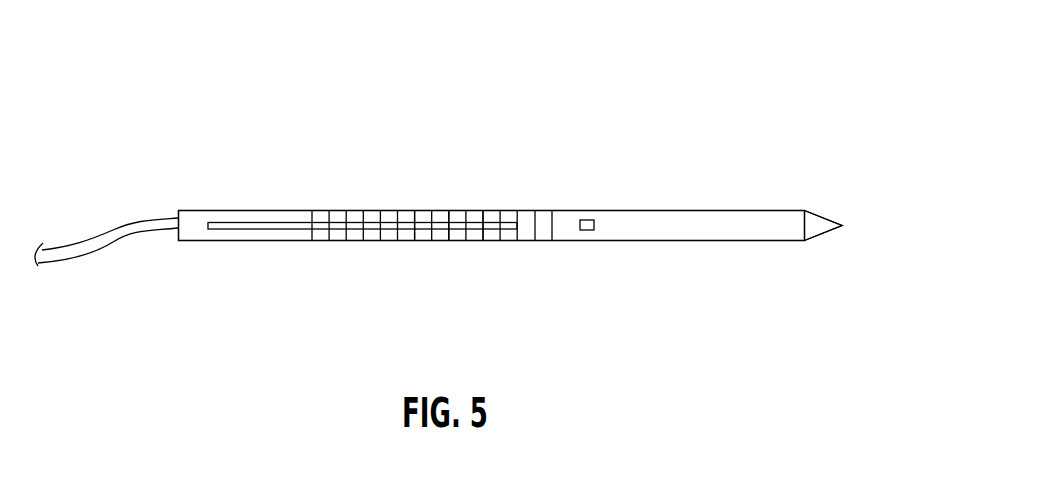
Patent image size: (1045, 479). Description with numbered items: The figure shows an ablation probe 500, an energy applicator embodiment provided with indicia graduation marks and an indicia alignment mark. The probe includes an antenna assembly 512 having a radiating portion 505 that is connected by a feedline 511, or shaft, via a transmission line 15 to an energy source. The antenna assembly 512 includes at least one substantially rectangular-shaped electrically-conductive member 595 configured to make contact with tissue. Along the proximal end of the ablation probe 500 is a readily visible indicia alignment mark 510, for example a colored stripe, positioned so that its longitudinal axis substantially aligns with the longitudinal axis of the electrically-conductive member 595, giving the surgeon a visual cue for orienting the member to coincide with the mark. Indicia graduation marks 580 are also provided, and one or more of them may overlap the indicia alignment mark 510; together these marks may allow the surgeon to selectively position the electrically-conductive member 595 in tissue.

The ablation probe 500 is at (583, 80).
The radiating portion 505 is at (717, 257).
The antenna assembly 512 is at (688, 177).
The transmission line 15 is at (126, 228).
The indicia alignment mark 510 is at (270, 231).
The feedline 511 is at (327, 255).
The indicia graduation marks 580 is at (480, 209).
The electrically-conductive member 595 is at (583, 233).